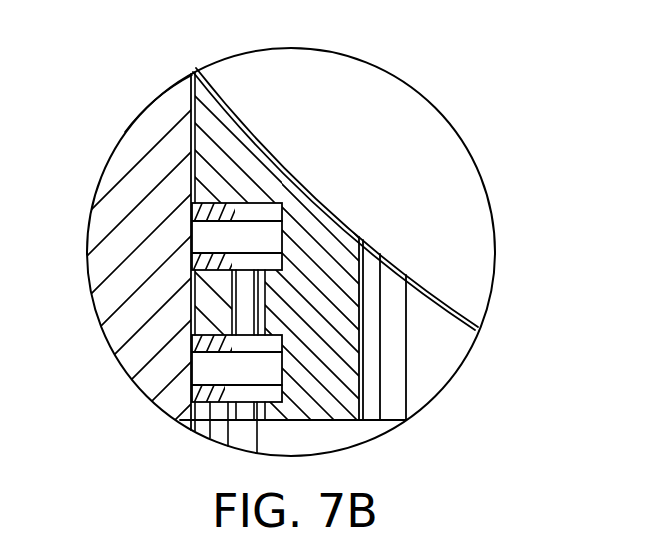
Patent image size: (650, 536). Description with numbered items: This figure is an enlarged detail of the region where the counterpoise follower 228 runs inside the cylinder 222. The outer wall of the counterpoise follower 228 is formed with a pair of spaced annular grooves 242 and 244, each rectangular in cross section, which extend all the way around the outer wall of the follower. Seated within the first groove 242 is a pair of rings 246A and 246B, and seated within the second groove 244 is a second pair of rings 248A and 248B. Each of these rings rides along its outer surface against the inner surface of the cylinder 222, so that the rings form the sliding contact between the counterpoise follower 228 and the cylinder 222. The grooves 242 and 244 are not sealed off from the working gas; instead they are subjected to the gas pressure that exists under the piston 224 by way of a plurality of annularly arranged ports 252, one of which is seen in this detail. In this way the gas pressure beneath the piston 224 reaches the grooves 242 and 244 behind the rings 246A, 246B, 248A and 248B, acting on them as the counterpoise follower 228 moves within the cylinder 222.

The cylinder 222 is at (125, 321).
The piston 224 is at (438, 309).
The counterpoise follower 228 is at (352, 421).
The annular groove 242 is at (282, 377).
The annular groove 244 is at (231, 270).
The ring 246A is at (200, 420).
The ring 246B is at (189, 362).
The ring 248A is at (282, 212).
The ring 248B is at (238, 217).
The port 252 is at (268, 297).